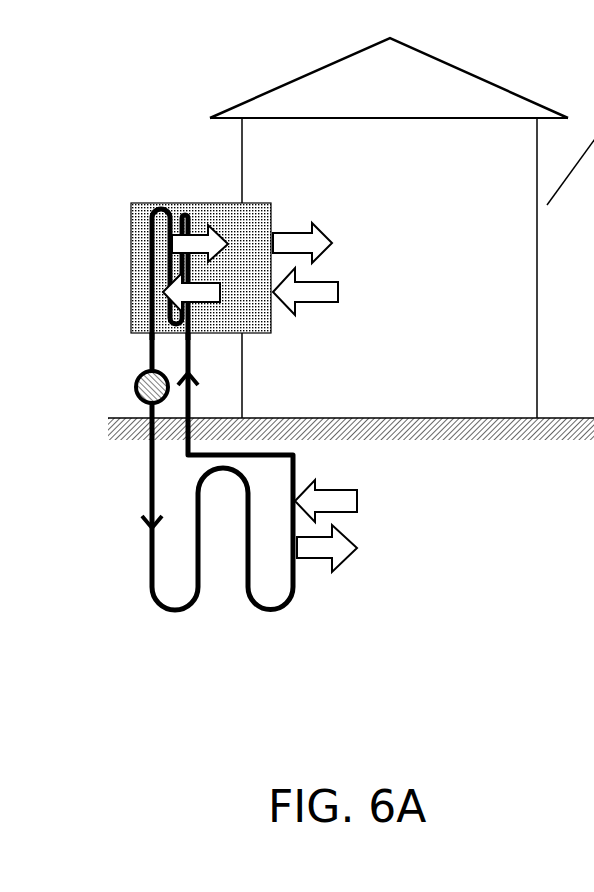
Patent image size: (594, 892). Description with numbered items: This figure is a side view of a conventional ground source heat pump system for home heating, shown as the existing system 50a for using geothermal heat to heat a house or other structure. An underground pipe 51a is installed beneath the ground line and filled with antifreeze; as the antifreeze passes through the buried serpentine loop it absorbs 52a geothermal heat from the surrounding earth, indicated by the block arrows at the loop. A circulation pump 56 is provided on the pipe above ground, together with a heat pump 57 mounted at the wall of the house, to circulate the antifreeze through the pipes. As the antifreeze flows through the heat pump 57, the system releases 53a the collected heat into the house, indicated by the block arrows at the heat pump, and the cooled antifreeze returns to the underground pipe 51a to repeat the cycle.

The existing system 50a is at (153, 675).
The underground pipe 51a is at (282, 620).
The absorption of geothermal heat 52a is at (355, 492).
The release of heat 53a is at (314, 229).
The circulation pump 56 is at (135, 385).
The heat pump 57 is at (180, 212).